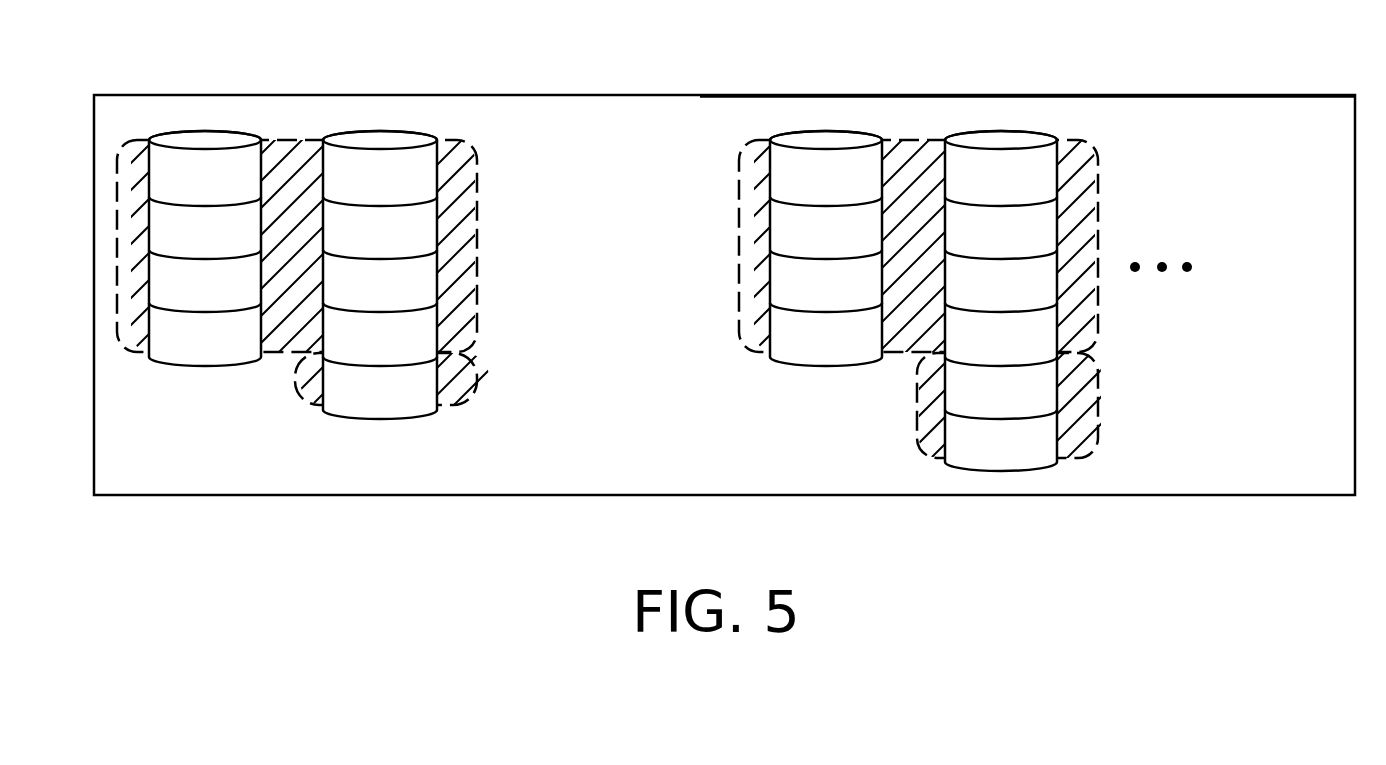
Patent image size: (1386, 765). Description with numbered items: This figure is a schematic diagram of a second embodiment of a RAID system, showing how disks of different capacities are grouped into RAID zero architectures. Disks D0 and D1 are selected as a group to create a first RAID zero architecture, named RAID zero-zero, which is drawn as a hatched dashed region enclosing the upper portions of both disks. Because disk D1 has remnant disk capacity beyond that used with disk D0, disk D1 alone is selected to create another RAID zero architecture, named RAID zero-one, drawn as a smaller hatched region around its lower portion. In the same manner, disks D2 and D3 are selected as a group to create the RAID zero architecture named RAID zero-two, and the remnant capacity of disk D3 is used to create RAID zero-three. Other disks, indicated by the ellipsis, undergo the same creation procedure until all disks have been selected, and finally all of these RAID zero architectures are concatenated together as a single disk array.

The disk D0 is at (208, 138).
The disk D1 is at (380, 138).
The disk D2 is at (827, 138).
The disk D3 is at (1000, 138).